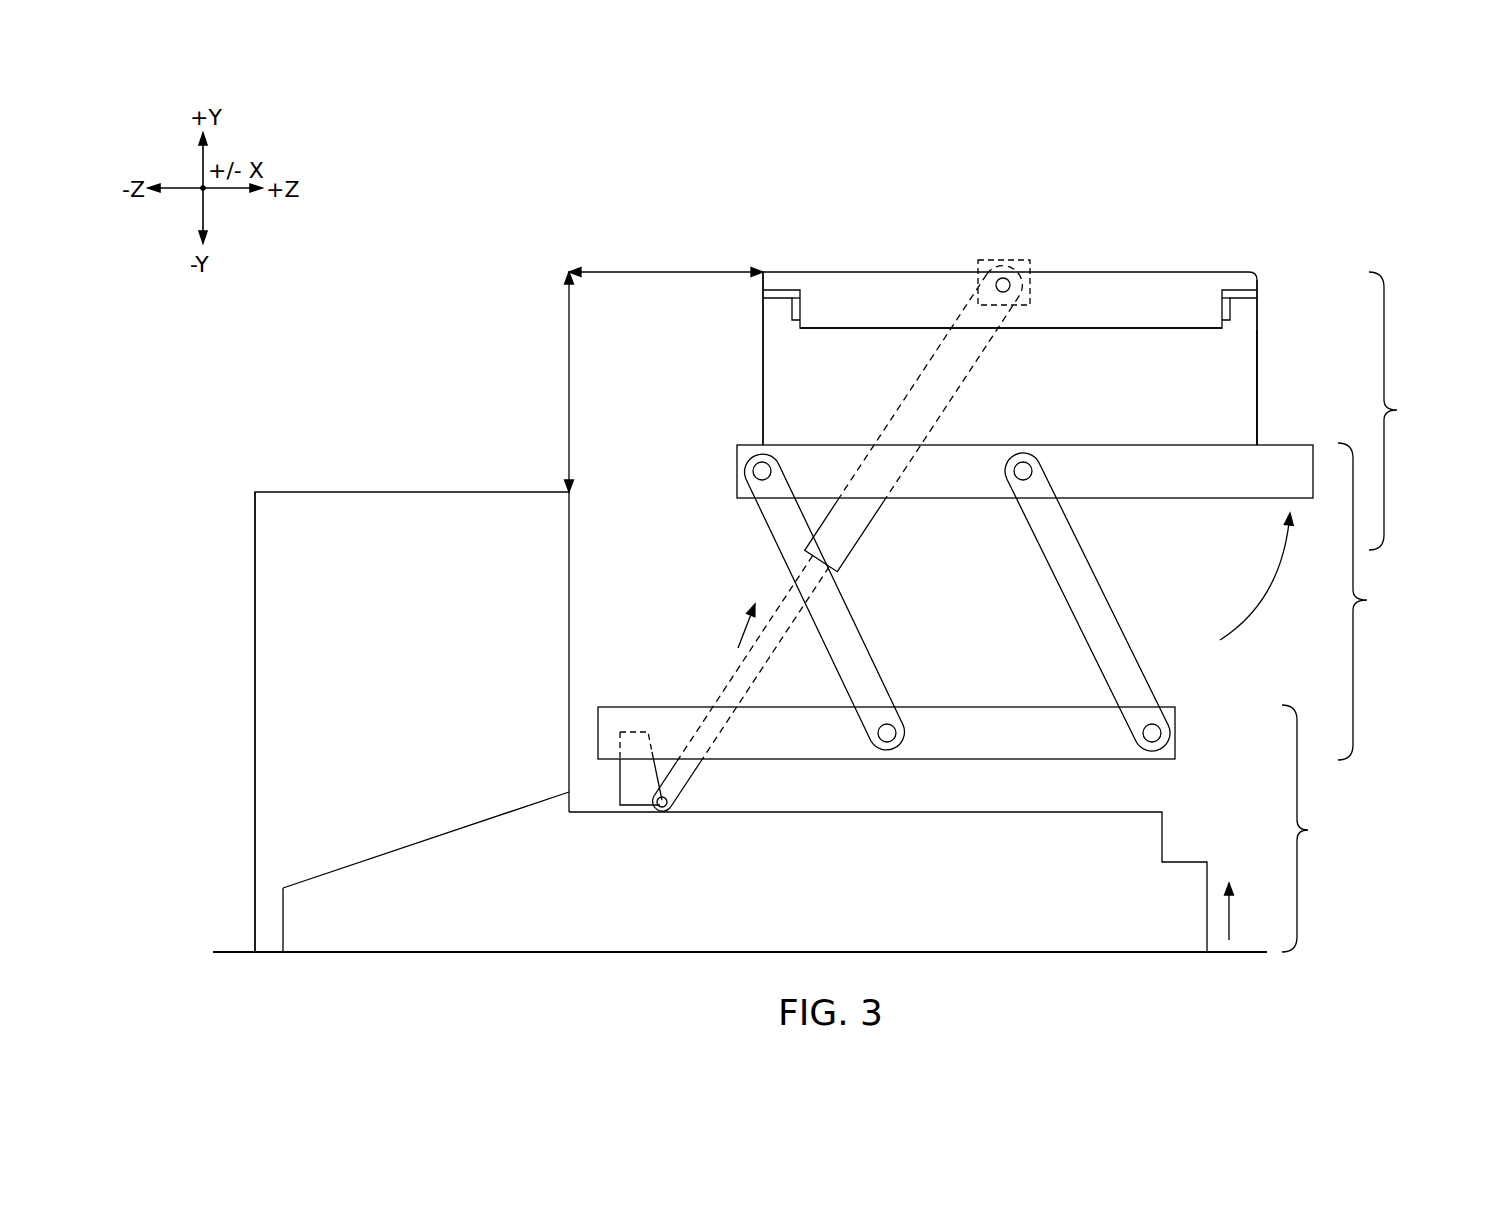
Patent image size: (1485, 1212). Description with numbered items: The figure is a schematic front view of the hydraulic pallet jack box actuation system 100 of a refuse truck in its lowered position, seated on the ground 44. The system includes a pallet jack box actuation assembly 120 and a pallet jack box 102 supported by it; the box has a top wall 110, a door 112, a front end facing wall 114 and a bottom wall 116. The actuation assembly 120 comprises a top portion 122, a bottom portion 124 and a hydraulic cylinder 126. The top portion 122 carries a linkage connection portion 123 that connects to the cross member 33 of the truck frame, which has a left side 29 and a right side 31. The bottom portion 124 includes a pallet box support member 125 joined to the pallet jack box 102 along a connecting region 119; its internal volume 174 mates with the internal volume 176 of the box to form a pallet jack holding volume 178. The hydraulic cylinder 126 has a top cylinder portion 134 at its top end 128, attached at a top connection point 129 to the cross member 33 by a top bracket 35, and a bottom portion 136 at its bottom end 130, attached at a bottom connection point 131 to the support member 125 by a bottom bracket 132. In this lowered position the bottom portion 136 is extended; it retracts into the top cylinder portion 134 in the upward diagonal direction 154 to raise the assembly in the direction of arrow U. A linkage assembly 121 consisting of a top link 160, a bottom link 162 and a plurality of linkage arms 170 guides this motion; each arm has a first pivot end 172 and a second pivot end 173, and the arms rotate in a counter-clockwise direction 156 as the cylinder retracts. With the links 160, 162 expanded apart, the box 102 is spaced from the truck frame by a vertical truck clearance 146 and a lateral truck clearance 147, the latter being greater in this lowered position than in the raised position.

The hydraulic pallet jack box actuation system 100 is at (1403, 177).
The pallet jack box 102 is at (253, 798).
The top wall 110 is at (408, 492).
The door 112 is at (255, 646).
The front end facing wall 114 is at (384, 637).
The bottom wall 116 is at (283, 955).
The connecting region 119 is at (392, 848).
The pallet jack box actuation assembly 120 is at (888, 171).
The linkage assembly 121 is at (1382, 601).
The top portion 122 is at (1110, 411).
The linkage connection portion 123 is at (1240, 370).
The bottom portion 124 is at (968, 828).
The pallet box support member 125 is at (1068, 940).
The hydraulic cylinder 126 is at (852, 576).
The top end 128 is at (935, 248).
The top connection point 129 is at (1018, 290).
The bottom end 130 is at (701, 871).
The bottom connection point 131 is at (655, 815).
The bottom bracket 132 is at (620, 806).
The top cylinder portion 134 is at (898, 378).
The bottom portion 136 is at (670, 790).
The vertical truck clearance 146 is at (573, 380).
The lateral truck clearance 147 is at (641, 268).
The upward diagonal direction 154 is at (730, 640).
The counter-clockwise direction 156 is at (1253, 617).
The top link 160 is at (1288, 456).
The bottom link 162 is at (988, 706).
The linkage arms 170 is at (870, 636).
The first pivot end 172 is at (753, 470).
The second pivot end 173 is at (888, 745).
The internal volume 174 is at (506, 977).
The internal volume 176 is at (272, 563).
The pallet jack holding volume 178 is at (245, 893).
The left side 29 is at (742, 305).
The right side 31 is at (1282, 301).
The cross member 33 is at (1140, 326).
The top bracket 35 is at (1010, 260).
The ground 44 is at (232, 955).
The arrow U is at (1229, 915).